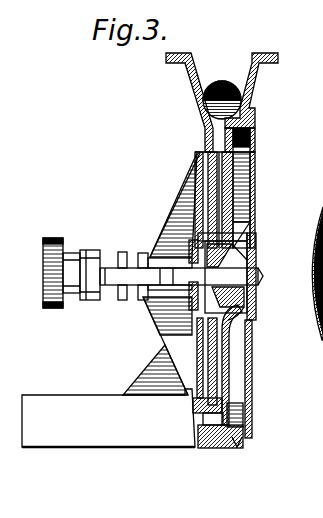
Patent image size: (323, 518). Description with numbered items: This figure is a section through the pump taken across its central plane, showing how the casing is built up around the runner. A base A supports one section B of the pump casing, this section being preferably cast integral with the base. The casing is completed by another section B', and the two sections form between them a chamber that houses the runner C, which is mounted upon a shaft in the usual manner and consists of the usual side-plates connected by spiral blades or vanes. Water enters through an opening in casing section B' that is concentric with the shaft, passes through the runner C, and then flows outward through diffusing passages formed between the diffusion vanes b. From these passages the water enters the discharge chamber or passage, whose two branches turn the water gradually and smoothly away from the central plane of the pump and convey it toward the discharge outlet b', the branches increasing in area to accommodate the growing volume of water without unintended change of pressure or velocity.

The base A is at (181, 436).
The casing section B is at (244, 199).
The casing section B' is at (243, 302).
The diffusion vanes b is at (267, 277).
The discharge outlet b' is at (251, 82).
The runner C is at (256, 211).